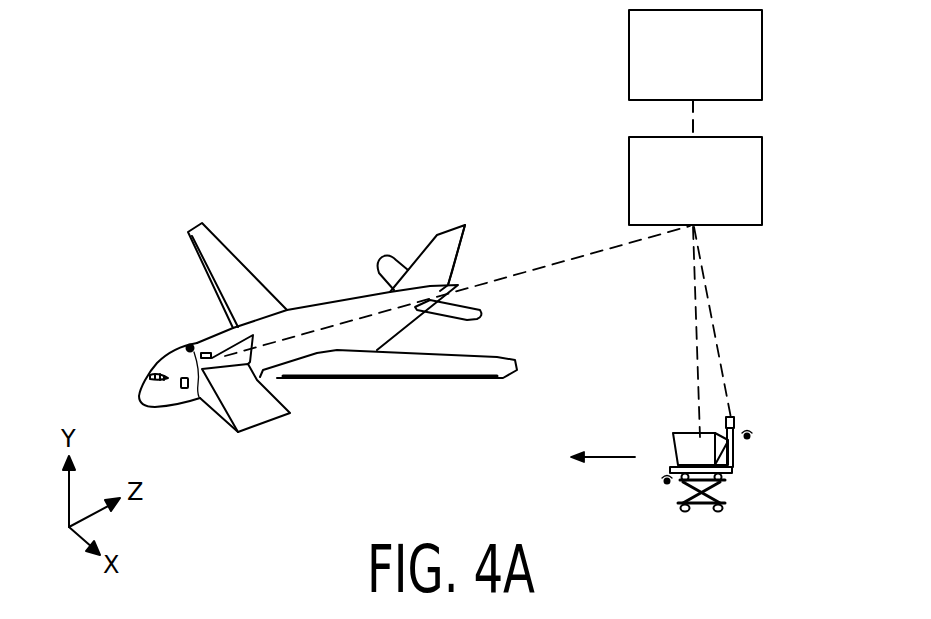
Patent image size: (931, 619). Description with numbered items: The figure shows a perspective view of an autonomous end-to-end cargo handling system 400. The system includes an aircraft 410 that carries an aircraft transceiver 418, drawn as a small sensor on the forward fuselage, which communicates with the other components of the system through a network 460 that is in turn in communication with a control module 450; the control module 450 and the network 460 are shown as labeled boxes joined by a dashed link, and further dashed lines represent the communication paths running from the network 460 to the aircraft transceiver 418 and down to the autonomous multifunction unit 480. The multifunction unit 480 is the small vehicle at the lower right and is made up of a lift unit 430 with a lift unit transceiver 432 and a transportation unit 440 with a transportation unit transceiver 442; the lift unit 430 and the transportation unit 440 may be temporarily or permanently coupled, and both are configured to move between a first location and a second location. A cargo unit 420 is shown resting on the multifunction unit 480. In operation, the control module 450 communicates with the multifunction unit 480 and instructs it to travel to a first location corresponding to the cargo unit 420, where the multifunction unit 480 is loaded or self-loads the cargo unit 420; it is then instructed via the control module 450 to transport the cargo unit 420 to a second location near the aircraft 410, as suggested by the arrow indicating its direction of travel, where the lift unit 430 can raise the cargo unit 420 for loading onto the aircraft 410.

The autonomous end-to-end cargo handling system 400 is at (163, 116).
The aircraft 410 is at (312, 310).
The aircraft transceiver 418 is at (199, 397).
The cargo unit 420 is at (675, 441).
The lift unit 430 is at (684, 487).
The lift unit transceiver 432 is at (723, 489).
The transportation unit 440 is at (734, 460).
The transportation unit transceiver 442 is at (733, 421).
The control module 450 is at (762, 52).
The network 460 is at (762, 174).
The autonomous multifunction unit 480 is at (814, 356).